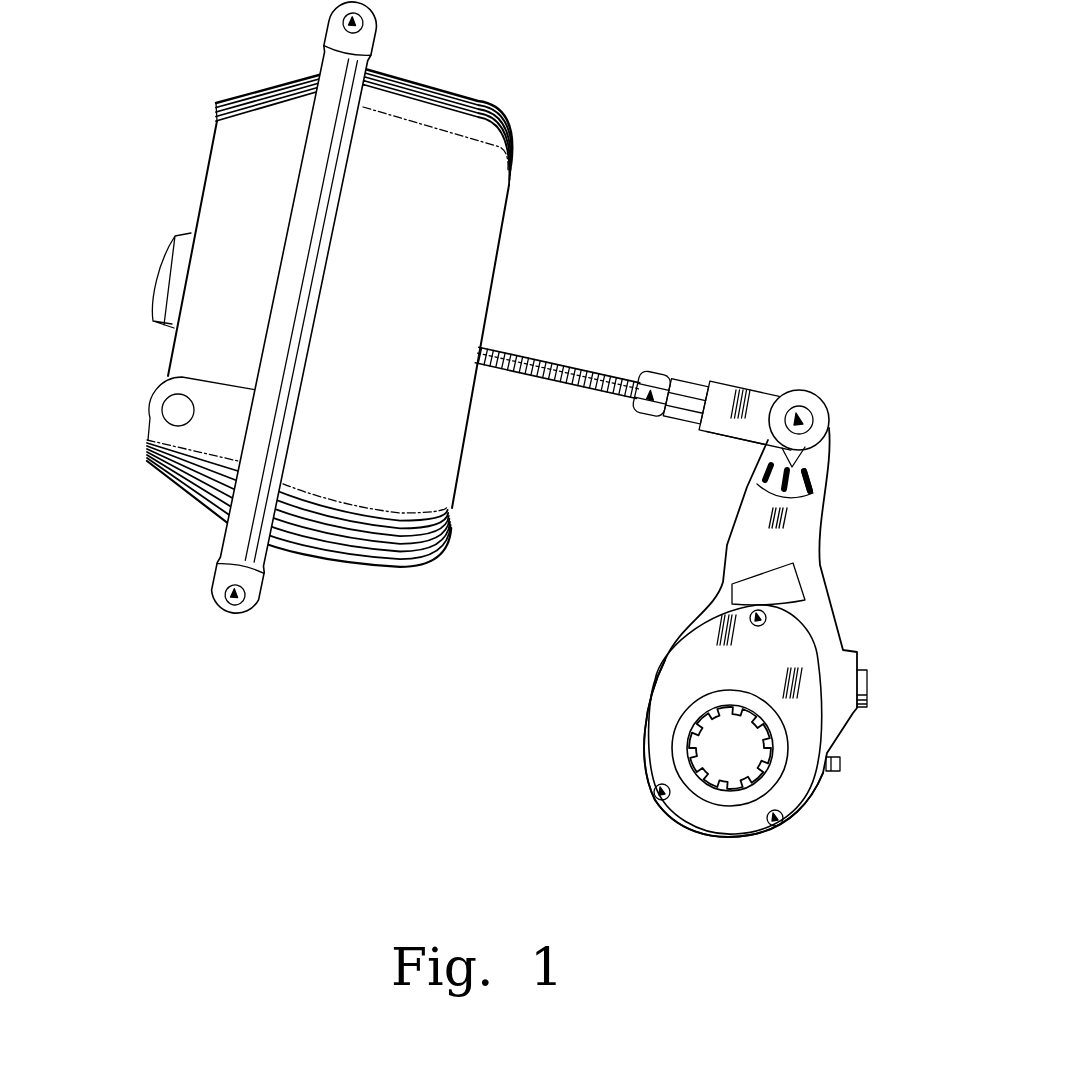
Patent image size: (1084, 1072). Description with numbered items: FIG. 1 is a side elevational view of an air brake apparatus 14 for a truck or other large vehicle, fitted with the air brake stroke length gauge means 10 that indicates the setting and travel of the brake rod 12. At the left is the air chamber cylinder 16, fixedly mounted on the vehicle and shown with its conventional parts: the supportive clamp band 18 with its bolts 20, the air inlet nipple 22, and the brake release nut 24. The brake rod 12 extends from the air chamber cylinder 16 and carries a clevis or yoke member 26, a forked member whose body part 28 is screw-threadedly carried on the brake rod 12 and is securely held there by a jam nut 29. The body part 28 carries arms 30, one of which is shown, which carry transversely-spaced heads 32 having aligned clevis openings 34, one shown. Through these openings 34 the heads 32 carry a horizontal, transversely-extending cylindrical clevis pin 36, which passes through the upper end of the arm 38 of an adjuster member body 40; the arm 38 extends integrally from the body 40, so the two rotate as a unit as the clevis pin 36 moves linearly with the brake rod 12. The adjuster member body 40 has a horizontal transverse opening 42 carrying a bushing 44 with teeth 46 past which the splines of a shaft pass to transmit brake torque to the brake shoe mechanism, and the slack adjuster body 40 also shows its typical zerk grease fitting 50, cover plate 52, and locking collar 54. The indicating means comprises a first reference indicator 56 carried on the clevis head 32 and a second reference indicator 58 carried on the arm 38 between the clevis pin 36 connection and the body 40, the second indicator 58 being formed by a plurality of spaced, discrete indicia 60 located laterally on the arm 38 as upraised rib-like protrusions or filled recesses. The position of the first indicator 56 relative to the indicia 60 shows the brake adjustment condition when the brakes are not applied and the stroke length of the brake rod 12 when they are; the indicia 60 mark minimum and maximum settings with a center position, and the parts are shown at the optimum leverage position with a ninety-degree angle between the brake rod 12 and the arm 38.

The air brake stroke length gauge means 10 is at (741, 478).
The brake rod 12 is at (506, 345).
The air brake apparatus 14 is at (585, 268).
The air chamber cylinder 16 is at (488, 160).
The clamp band 18 is at (352, 137).
The bolts 20 is at (344, 23).
The air inlet nipple 22 is at (163, 411).
The brake release nut 24 is at (165, 268).
The clevis or yoke member 26 is at (723, 368).
The body part 28 is at (700, 378).
The jam nut 29 is at (663, 372).
The arms 30 is at (738, 431).
The heads 32 is at (815, 404).
The clevis openings 34 is at (799, 396).
The clevis pin 36 is at (813, 421).
The arm 38 is at (808, 533).
The adjuster member body 40 is at (661, 657).
The opening 42 is at (787, 826).
The bushing 44 is at (680, 757).
The teeth 46 is at (724, 790).
The zerk grease fitting 50 is at (842, 764).
The cover plate 52 is at (800, 634).
The locking collar 54 is at (863, 693).
The first reference indicator 56 is at (805, 458).
The second reference indicator 58 is at (760, 490).
The indicia 60 is at (810, 483).